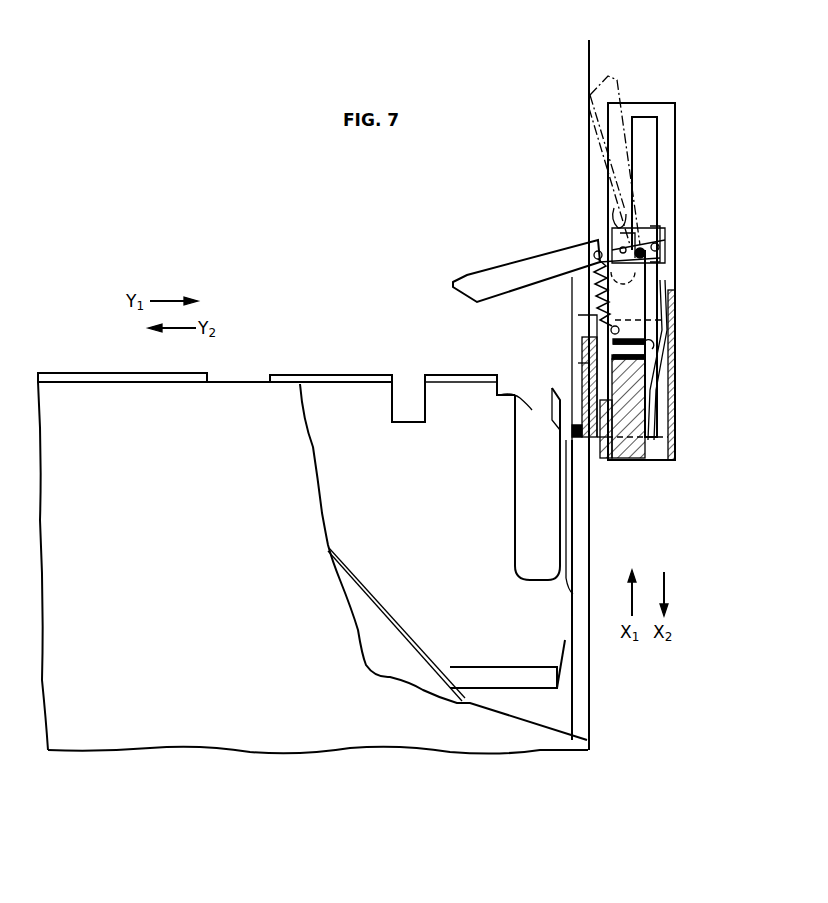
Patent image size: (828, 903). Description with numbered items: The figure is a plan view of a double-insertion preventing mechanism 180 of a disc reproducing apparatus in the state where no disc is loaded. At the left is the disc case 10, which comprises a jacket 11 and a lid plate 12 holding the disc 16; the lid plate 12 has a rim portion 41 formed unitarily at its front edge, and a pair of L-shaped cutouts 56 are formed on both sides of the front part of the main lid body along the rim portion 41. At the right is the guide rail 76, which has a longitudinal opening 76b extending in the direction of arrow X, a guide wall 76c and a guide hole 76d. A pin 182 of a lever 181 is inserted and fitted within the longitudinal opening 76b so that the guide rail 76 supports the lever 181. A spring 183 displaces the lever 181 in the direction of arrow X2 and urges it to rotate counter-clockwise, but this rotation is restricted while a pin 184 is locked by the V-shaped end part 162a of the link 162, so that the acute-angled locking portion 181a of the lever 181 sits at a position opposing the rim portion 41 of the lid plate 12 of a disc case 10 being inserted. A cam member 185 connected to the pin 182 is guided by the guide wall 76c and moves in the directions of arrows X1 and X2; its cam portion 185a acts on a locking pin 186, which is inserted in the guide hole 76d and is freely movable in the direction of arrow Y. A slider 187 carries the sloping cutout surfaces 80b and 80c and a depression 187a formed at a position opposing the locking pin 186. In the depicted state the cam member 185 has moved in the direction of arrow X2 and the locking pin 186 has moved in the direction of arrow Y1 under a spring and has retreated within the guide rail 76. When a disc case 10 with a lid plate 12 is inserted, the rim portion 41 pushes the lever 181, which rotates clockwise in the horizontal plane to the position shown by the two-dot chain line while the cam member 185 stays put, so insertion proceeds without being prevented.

The disc case 10 is at (333, 752).
The jacket 11 is at (187, 745).
The lid plate 12 is at (330, 372).
The disc 16 is at (400, 620).
The rim portion 41 is at (452, 372).
The L-shaped cutouts 56 is at (541, 484).
The guide rail 76 is at (670, 177).
The longitudinal opening 76b is at (622, 215).
The guide wall 76c is at (665, 392).
The guide hole 76d is at (666, 322).
The sloping cutout surface 80b is at (582, 338).
The sloping cutout surface 80c is at (600, 395).
The link 162 is at (652, 137).
The V-shaped end part 162a is at (660, 248).
The double-insertion preventing mechanism 180 is at (445, 187).
The lever 181 is at (521, 268).
The locking portion 181a is at (464, 282).
The pin 182 is at (615, 243).
The spring 183 is at (586, 292).
The pin 184 is at (660, 257).
The cam member 185 is at (668, 280).
The cam portion 185a is at (662, 370).
The locking pin 186 is at (656, 345).
The slider 187 is at (578, 318).
The depression 187a is at (578, 363).